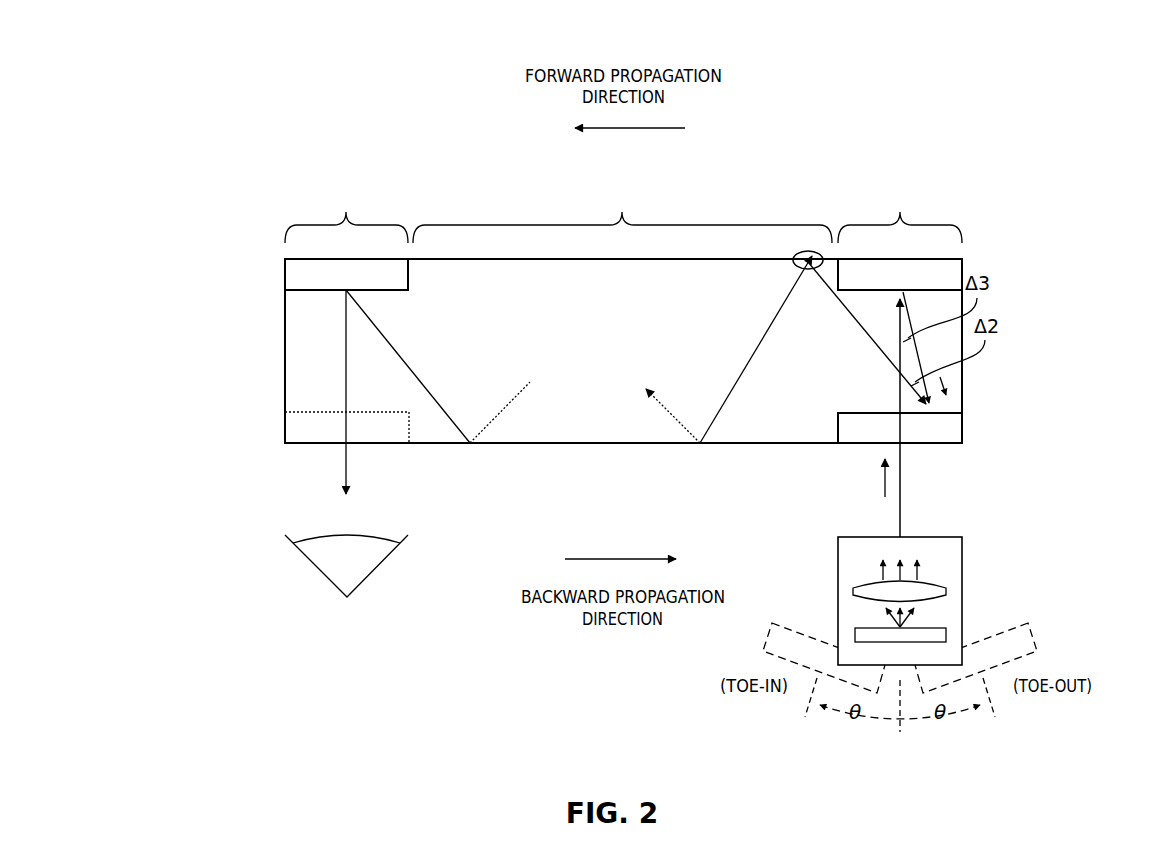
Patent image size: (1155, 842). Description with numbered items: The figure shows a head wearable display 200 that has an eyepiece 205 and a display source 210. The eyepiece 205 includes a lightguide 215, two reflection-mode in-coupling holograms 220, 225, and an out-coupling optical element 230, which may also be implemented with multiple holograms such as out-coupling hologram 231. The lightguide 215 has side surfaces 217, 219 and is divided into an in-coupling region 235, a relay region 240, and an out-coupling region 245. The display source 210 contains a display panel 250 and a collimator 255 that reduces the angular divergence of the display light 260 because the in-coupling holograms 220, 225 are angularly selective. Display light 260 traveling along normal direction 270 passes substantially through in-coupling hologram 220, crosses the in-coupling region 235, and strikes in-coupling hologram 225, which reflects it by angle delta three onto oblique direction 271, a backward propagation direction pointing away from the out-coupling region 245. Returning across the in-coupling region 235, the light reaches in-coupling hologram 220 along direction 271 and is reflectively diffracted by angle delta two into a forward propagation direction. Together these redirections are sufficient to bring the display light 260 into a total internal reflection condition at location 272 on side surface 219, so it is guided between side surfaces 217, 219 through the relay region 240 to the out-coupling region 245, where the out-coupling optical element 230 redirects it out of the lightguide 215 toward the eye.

The head wearable display 200 is at (199, 104).
The eyepiece 205 is at (226, 507).
The display source 210 is at (962, 537).
The lightguide 215 is at (623, 351).
The side surface 217 is at (533, 443).
The side surface 219 is at (475, 259).
The in-coupling hologram 220 is at (900, 428).
The in-coupling hologram 225 is at (900, 274).
The out-coupling optical element 230 is at (346, 274).
The out-coupling hologram 231 is at (298, 412).
The in-coupling region 235 is at (900, 202).
The relay region 240 is at (622, 207).
The out-coupling region 245 is at (346, 202).
The display panel 250 is at (946, 636).
The collimator 255 is at (870, 585).
The display light 260 is at (760, 348).
The normal direction 270 is at (885, 470).
The oblique direction 271 is at (955, 388).
The location 272 is at (806, 250).